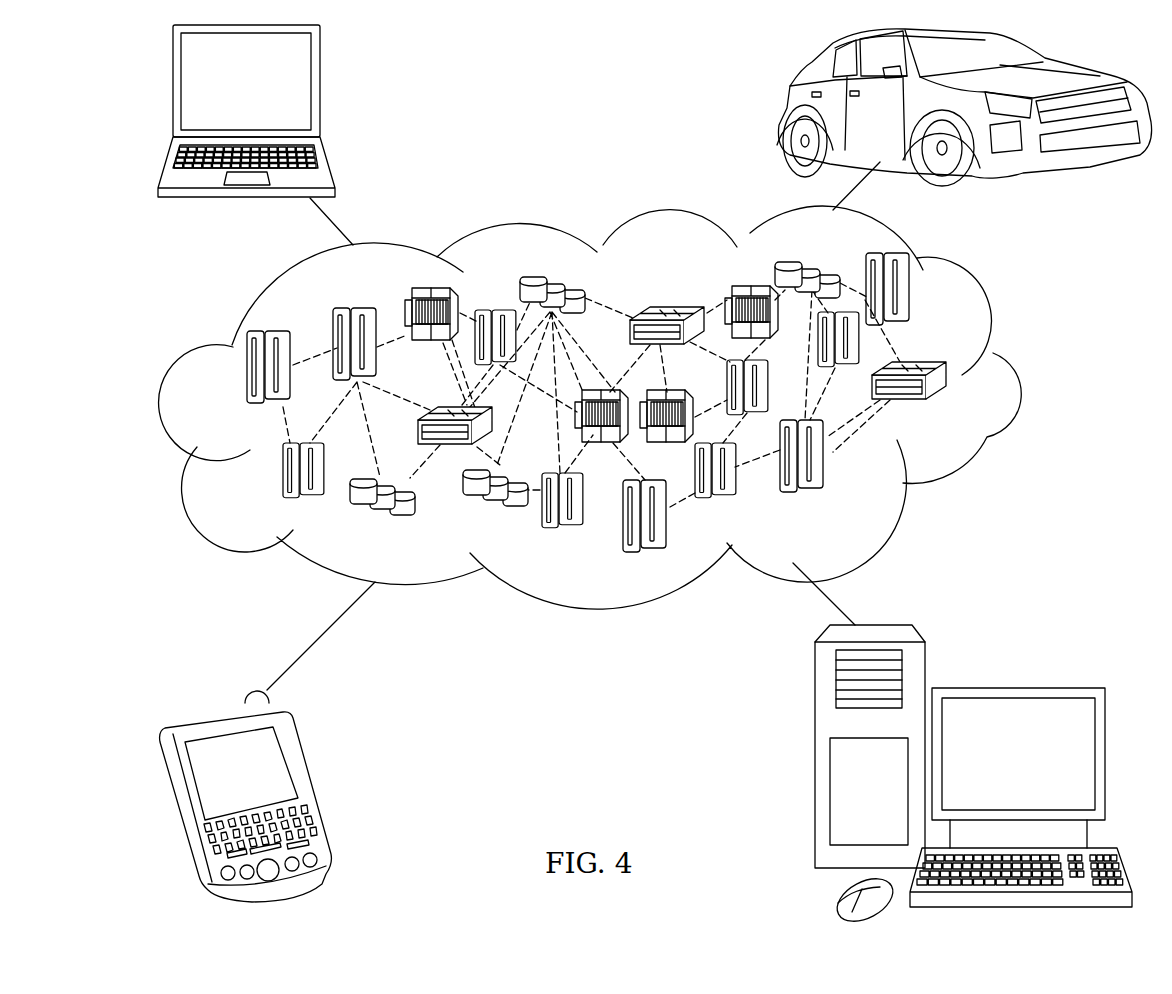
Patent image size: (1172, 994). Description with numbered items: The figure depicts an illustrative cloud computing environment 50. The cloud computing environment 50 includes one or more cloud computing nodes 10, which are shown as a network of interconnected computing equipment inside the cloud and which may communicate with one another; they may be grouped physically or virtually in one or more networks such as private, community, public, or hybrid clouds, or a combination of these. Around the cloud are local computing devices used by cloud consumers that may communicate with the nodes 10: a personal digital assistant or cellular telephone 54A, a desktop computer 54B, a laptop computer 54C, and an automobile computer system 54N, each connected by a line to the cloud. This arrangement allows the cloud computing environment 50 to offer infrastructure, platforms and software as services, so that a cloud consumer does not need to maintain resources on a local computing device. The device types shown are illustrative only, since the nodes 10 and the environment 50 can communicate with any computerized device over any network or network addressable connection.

The cloud computing node 10 is at (955, 413).
The cloud computing environment 50 is at (1018, 381).
The personal digital assistant or cellular telephone 54A is at (310, 786).
The desktop computer 54B is at (1015, 688).
The laptop computer 54C is at (320, 92).
The automobile computer system 54N is at (782, 108).